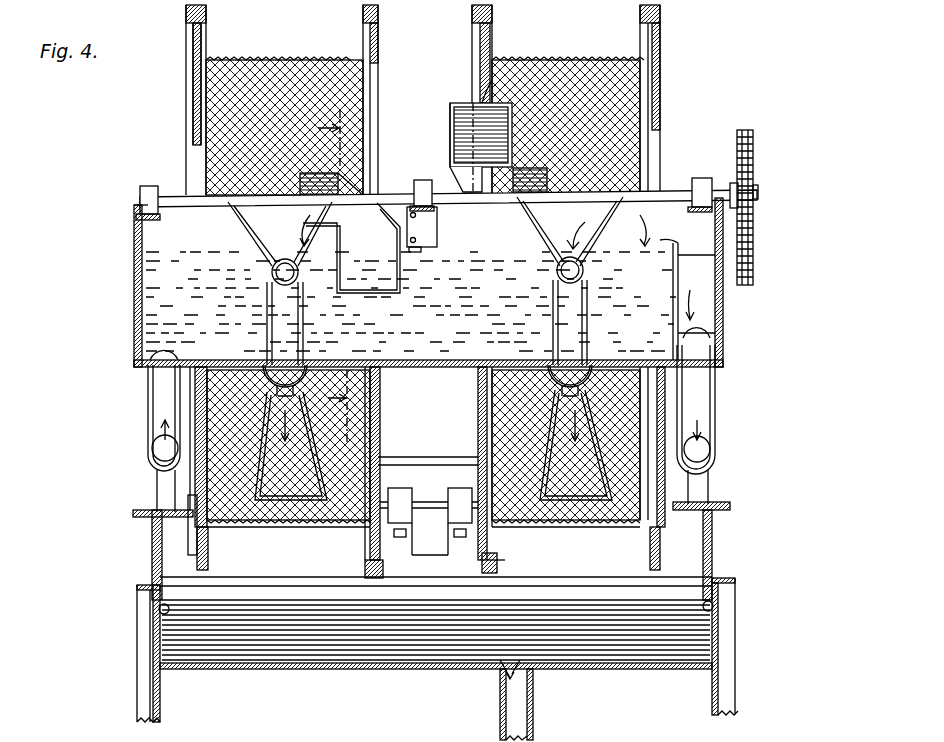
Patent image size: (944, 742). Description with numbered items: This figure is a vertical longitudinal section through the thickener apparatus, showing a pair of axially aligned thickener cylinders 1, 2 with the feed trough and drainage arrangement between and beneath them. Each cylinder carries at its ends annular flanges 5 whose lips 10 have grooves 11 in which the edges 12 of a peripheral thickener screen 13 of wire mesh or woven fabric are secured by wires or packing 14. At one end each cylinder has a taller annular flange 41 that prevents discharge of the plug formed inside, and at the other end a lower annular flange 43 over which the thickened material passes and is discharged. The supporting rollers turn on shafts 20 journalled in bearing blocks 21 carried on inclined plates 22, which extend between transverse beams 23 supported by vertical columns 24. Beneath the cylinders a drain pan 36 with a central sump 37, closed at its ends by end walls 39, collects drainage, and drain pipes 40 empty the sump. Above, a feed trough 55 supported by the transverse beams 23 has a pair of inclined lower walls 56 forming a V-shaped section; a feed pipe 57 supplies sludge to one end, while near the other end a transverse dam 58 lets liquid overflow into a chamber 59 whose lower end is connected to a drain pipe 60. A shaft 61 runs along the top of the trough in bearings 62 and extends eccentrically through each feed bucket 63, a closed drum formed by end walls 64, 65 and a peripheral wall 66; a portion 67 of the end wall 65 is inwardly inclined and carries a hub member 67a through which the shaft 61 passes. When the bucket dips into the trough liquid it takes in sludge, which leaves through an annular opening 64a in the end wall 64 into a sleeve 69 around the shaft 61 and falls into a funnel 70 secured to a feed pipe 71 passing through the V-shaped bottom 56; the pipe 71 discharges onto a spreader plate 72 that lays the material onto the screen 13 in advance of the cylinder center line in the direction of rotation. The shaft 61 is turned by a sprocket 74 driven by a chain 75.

The thickener cylinder 1 is at (669, 24).
The thickener cylinder 2 is at (178, 21).
The annular flange 5 is at (519, 562).
The lip 10 is at (190, 92).
The groove 11 is at (190, 74).
The edge of thickener screen 12 is at (378, 52).
The peripheral thickener screen 13 is at (298, 62).
The wires or packing 14 is at (200, 62).
The shaft 20 is at (430, 514).
The bearing block 21 is at (400, 488).
The inclined plate 22 is at (432, 488).
The transverse beam 23 is at (152, 557).
The vertical column 24 is at (137, 720).
The drain pan 36 is at (420, 668).
The central sump 37 is at (310, 668).
The end wall 39 is at (160, 615).
The drain pipe 40 is at (535, 712).
The annular flange 41 is at (215, 152).
The annular flange 43 is at (378, 96).
The feed trough 55 is at (735, 320).
The inclined lower wall 56 is at (416, 365).
The feed pipe 57 is at (150, 418).
The transverse dam 58 is at (722, 337).
The chamber 59 is at (722, 302).
The drain pipe 60 is at (718, 397).
The shaft 61 is at (759, 192).
The bearing 62 is at (148, 186).
The feed bucket 63 is at (462, 94).
The end wall 64 is at (520, 128).
The annular opening 64a is at (548, 170).
The end wall 65 is at (450, 126).
The peripheral wall 66 is at (492, 80).
The inwardly inclined portion 67 is at (505, 215).
The hub member 67a is at (300, 186).
The sleeve 69 is at (579, 226).
The funnel 70 is at (262, 232).
The feed pipe 71 is at (592, 292).
The spreader plate 72 is at (433, 445).
The sprocket 74 is at (755, 222).
The chain 75 is at (740, 165).